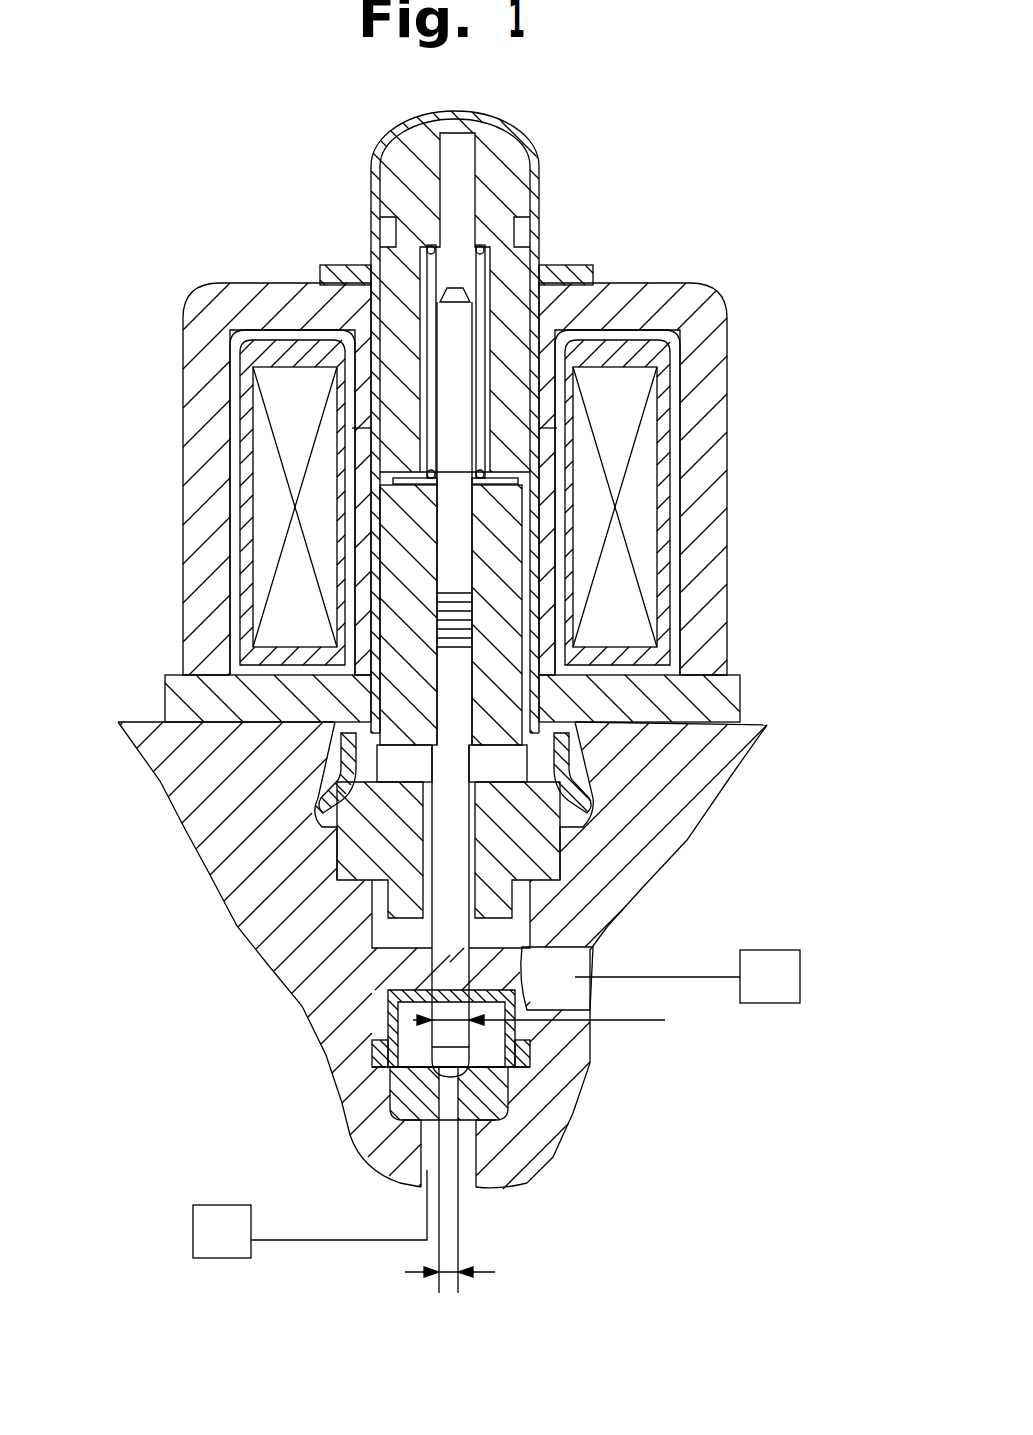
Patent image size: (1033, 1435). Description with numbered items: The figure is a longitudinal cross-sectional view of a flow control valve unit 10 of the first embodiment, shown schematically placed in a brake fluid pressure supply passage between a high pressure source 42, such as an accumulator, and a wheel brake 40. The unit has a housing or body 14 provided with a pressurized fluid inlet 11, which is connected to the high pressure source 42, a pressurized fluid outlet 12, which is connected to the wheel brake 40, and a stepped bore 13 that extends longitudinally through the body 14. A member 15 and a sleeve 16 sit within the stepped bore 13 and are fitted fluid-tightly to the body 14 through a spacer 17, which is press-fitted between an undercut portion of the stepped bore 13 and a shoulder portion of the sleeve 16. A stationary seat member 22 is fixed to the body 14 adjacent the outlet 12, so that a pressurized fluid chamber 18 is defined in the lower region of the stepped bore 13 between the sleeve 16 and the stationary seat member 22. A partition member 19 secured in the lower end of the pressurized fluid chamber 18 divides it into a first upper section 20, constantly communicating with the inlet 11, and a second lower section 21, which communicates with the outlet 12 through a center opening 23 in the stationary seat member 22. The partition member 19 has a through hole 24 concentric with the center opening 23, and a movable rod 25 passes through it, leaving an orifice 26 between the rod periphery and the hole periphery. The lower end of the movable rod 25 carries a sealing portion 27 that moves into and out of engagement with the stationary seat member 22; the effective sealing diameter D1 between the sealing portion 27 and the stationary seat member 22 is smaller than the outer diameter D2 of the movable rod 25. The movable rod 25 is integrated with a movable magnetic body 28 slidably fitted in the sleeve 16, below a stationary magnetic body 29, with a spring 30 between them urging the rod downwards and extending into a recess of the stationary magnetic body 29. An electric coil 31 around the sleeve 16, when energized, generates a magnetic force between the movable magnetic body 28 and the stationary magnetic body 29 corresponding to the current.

The flow control valve unit 10 is at (658, 212).
The pressurized fluid inlet 11 is at (580, 958).
The pressurized fluid outlet 12 is at (468, 1182).
The stepped bore 13 is at (560, 870).
The body 14 is at (675, 795).
The member 15 is at (350, 830).
The sleeve 16 is at (535, 226).
The spacer 17 is at (330, 770).
The pressurized fluid chamber 18 is at (515, 760).
The partition member 19 is at (390, 1000).
The first section 20 is at (553, 920).
The second section 21 is at (490, 1040).
The stationary seat member 22 is at (430, 1090).
The center opening 23 is at (452, 1102).
The through hole 24 is at (378, 1048).
The movable rod 25 is at (440, 950).
The orifice 26 is at (505, 1000).
The sealing portion 27 is at (458, 1072).
The movable magnetic body 28 is at (395, 508).
The stationary magnetic body 29 is at (400, 325).
The spring 30 is at (400, 468).
The electric coil 31 is at (645, 525).
The wheel brake 40 is at (205, 1210).
The high pressure source 42 is at (777, 947).
The effective sealing diameter D1 is at (476, 1270).
The outer diameter of the movable rod D2 is at (565, 1020).